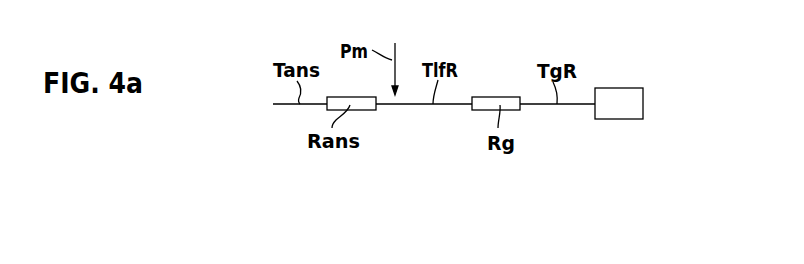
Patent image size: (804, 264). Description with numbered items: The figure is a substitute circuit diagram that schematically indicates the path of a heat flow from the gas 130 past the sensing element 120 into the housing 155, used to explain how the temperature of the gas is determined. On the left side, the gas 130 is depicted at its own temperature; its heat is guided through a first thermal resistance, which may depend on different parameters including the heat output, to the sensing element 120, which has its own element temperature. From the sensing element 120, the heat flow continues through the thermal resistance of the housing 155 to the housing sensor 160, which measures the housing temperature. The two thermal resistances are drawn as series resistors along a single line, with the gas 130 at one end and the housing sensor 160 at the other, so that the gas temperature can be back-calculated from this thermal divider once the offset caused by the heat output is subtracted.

The sensing element 120 is at (441, 175).
The gas 130 is at (308, 24).
The housing 155 is at (552, 24).
The housing sensor 160 is at (620, 105).